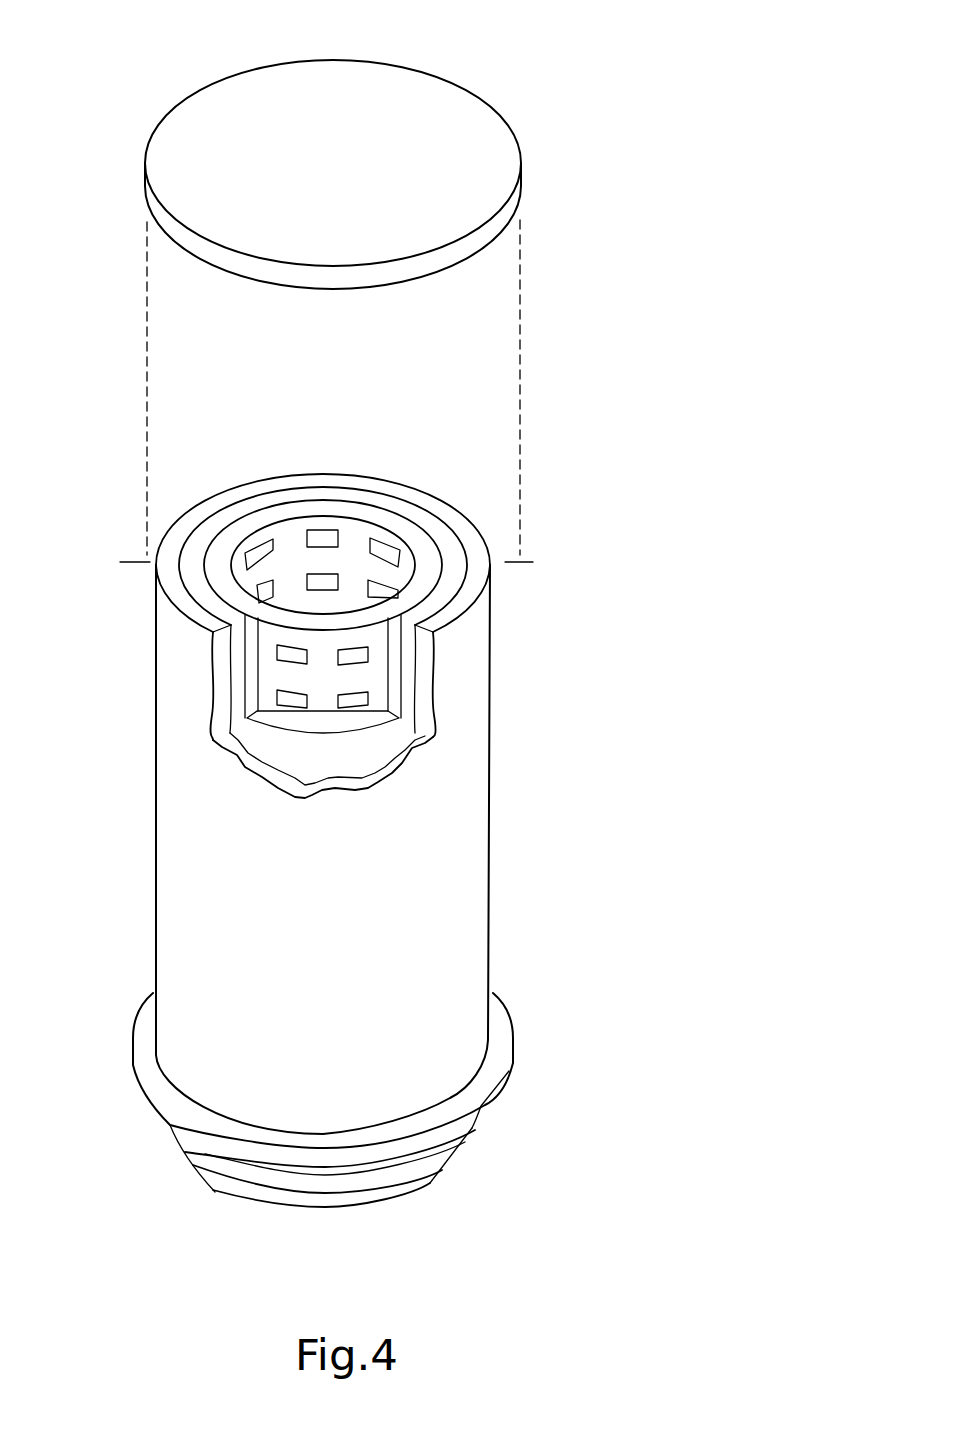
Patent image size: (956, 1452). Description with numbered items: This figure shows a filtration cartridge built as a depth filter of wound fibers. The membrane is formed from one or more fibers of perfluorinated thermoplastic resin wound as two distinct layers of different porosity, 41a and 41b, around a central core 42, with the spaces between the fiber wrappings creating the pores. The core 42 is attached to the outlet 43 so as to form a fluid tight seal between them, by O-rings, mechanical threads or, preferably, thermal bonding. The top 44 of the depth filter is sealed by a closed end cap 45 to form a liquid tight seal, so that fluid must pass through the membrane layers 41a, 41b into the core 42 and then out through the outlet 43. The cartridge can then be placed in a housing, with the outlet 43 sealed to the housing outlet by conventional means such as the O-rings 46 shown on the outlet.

The closed end cap 45 is at (412, 100).
The top of the depth filter 44 is at (243, 469).
The first membrane layer 41a is at (304, 487).
The second membrane layer 41b is at (436, 603).
The central core 42 is at (370, 512).
The outlet 43 is at (428, 1183).
The O-rings 46 is at (369, 1182).